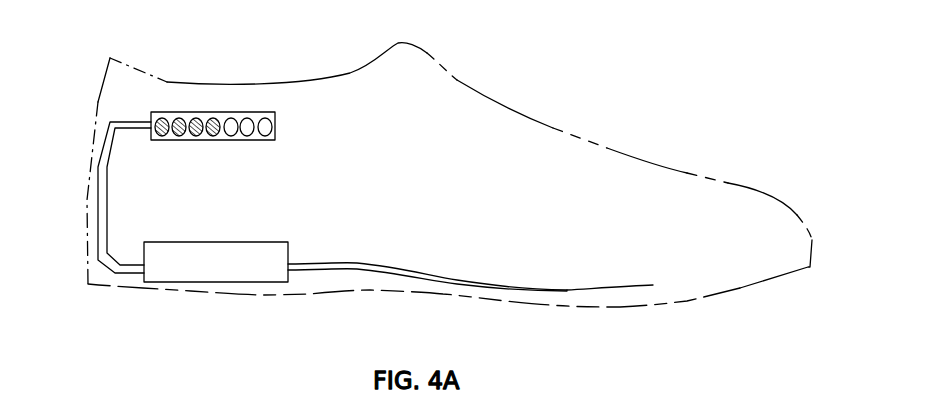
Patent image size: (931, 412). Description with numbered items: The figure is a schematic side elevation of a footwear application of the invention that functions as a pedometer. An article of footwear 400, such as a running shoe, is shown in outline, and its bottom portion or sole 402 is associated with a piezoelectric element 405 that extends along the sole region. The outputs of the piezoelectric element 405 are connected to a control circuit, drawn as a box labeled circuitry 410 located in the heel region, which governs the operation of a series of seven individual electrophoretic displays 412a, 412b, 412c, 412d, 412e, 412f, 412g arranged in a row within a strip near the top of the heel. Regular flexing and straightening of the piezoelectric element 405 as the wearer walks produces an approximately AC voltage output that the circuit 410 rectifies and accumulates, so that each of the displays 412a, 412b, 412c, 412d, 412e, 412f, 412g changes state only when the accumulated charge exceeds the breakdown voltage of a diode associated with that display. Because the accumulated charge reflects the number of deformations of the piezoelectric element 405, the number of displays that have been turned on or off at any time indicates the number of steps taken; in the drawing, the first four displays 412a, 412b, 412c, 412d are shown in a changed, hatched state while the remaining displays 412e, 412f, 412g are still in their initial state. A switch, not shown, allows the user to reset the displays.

The article of footwear 400 is at (575, 46).
The sole 402 is at (685, 300).
The piezoelectric element 405 is at (577, 290).
The circuit 410 is at (197, 282).
The electrophoretic display 412a is at (152, 118).
The electrophoretic display 412b is at (181, 118).
The electrophoretic display 412c is at (197, 118).
The electrophoretic display 412d is at (213, 137).
The electrophoretic display 412e is at (229, 137).
The electrophoretic display 412f is at (247, 137).
The electrophoretic display 412g is at (268, 127).